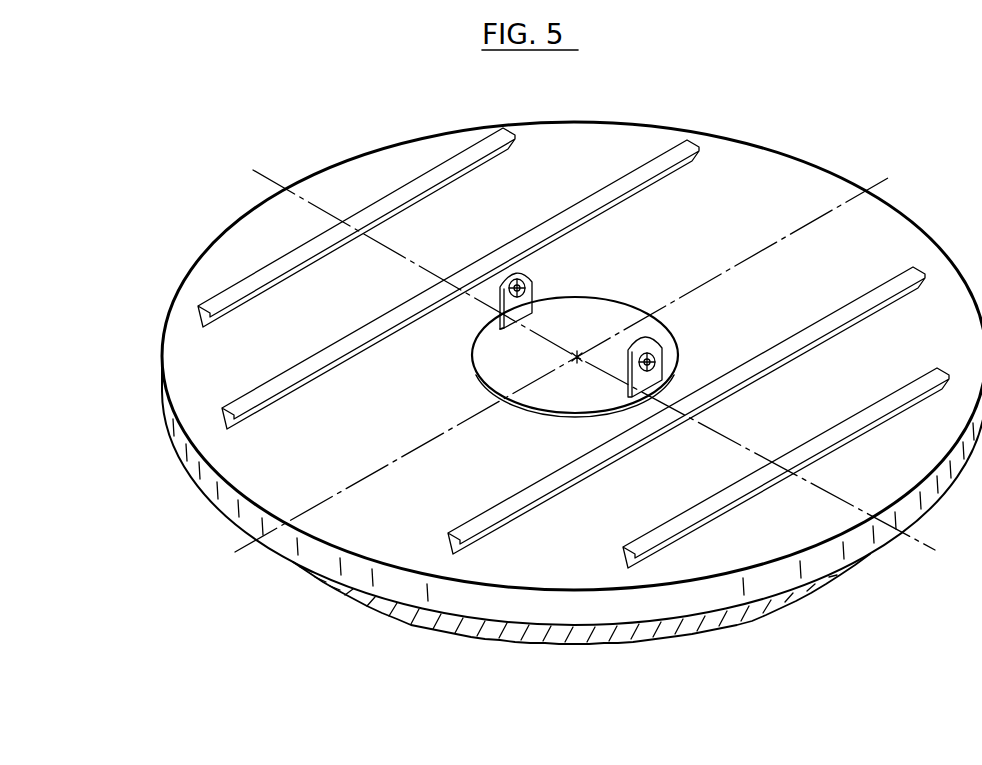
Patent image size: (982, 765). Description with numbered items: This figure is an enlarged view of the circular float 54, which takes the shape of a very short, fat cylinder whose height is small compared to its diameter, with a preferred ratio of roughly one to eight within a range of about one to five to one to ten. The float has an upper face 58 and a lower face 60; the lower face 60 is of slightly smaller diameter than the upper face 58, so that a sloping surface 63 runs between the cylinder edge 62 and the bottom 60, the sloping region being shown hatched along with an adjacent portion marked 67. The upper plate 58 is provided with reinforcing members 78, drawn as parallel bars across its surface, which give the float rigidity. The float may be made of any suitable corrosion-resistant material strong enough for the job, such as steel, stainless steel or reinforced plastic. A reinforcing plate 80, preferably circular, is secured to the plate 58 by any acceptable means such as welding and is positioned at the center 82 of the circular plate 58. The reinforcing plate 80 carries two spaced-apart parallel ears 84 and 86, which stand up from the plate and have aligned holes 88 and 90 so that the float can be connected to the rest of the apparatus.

The circular float 54 is at (527, 371).
The upper face 58 is at (575, 172).
The lower face 60 is at (768, 615).
The cylinder edge 62 is at (193, 468).
The sloping surface 63 is at (730, 623).
The hatched bottom layer 67 is at (686, 632).
The reinforcing members 78 is at (507, 128).
The reinforcing plate 80 is at (579, 355).
The center 82 is at (537, 301).
The ear 84 is at (664, 376).
The ear 86 is at (533, 291).
The hole 88 is at (657, 354).
The hole 90 is at (500, 320).